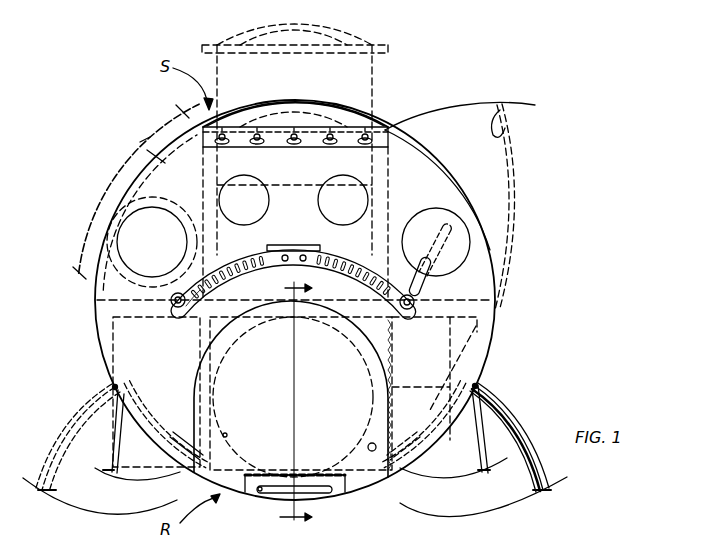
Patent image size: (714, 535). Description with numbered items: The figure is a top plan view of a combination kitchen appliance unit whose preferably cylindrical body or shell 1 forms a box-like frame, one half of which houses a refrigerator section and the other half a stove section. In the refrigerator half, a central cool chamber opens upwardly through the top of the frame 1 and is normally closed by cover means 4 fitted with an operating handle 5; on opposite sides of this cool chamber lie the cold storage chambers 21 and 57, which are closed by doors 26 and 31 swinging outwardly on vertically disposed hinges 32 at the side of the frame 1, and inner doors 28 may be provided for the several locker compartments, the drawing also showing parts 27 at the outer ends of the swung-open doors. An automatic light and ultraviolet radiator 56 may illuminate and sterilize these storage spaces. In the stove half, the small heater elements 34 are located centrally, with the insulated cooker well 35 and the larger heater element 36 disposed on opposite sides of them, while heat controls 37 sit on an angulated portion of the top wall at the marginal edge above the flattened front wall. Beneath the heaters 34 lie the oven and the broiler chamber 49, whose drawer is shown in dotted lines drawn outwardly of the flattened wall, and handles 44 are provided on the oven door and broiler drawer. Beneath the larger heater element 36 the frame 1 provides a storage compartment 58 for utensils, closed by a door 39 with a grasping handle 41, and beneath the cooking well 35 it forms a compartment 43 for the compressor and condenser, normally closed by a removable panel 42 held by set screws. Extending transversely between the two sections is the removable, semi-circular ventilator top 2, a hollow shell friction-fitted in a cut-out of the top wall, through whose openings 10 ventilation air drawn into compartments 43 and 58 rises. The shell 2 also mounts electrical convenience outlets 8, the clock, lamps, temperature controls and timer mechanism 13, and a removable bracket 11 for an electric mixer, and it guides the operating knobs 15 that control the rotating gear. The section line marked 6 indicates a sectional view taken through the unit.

The cylindrical body or shell 1 is at (96, 318).
The ventilator top 2 is at (212, 281).
The cover means 4 is at (212, 350).
The operating handle 5 is at (305, 495).
The section line 6- 6 is at (303, 406).
The electrical convenience outlets 8 is at (301, 262).
The openings 10 is at (362, 242).
The bracket 11 is at (416, 280).
The electric clock, lamps, temperature controls and timer mechanism 13 is at (274, 246).
The operating handles or knobs 15 is at (176, 302).
The cold storage chamber 21 is at (465, 337).
The door 26 is at (512, 420).
The foot 27 is at (50, 488).
The inner door 28 is at (114, 452).
The door 31 is at (72, 427).
The hinges 32 is at (113, 387).
The heater elements 34 is at (337, 195).
The cooker well 35 is at (148, 264).
The heater element 36 is at (452, 232).
The heat controls 37 is at (373, 130).
The door 39 is at (521, 212).
The grasping handle 41 is at (506, 125).
The removable panel 42 is at (108, 184).
The compartment 43 is at (140, 142).
The handles 44 is at (333, 31).
The broiler chamber 49 is at (272, 86).
The automatic light and ultraviolet radiator 56 is at (369, 445).
The cold storage chamber 57 is at (143, 348).
The storage compartment 58 is at (421, 169).